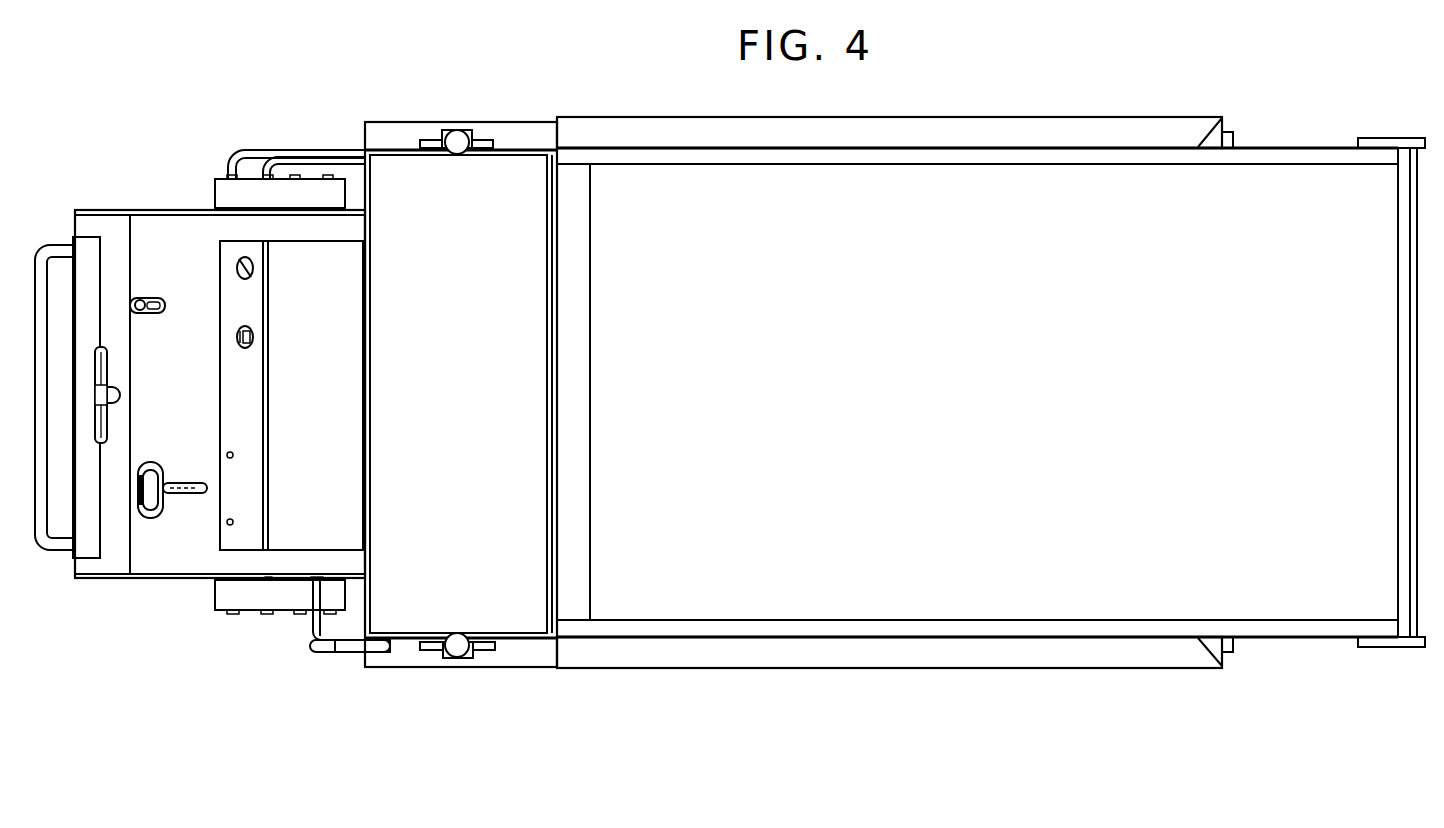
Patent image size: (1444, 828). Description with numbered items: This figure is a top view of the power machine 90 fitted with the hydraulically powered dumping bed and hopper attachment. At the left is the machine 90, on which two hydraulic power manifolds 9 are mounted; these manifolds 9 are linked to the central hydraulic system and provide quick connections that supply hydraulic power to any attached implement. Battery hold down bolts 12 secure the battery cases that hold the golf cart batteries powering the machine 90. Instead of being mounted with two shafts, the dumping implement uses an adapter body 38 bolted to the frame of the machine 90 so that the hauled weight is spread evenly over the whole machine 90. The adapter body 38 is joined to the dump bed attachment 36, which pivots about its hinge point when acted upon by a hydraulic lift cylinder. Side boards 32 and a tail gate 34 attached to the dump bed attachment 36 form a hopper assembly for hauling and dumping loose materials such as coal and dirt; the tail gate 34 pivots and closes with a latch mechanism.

The machine 90 is at (375, 95).
The hydraulic power manifold 9 is at (235, 190).
The battery hold down bolt 12 is at (458, 140).
The adapter body 38 is at (905, 127).
The side board 32 is at (1302, 153).
The tail gate 34 is at (1410, 487).
The dump bed attachment 36 is at (995, 421).